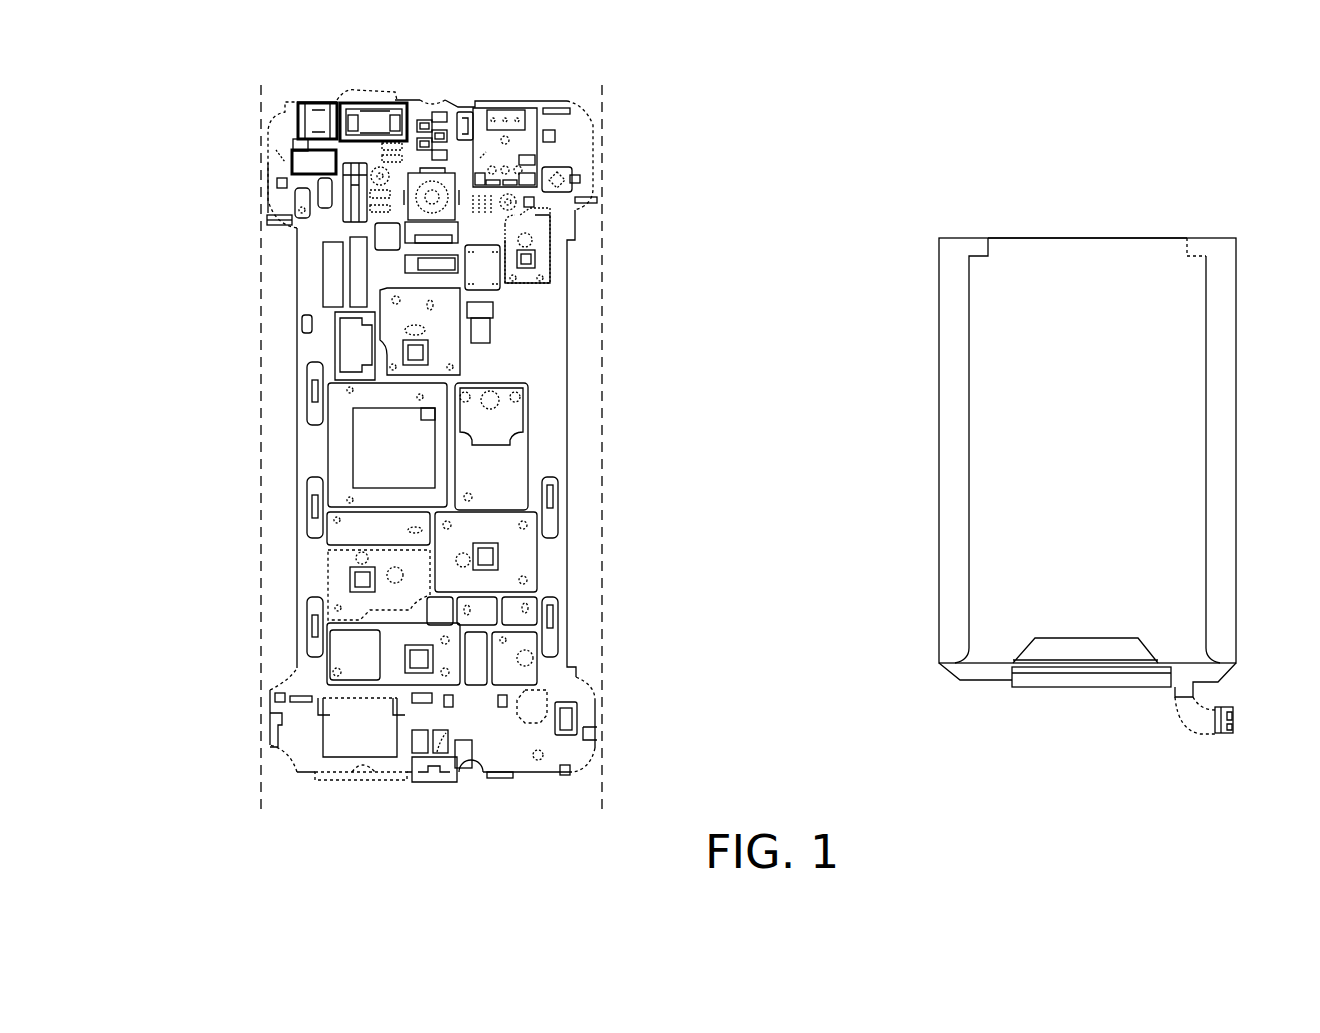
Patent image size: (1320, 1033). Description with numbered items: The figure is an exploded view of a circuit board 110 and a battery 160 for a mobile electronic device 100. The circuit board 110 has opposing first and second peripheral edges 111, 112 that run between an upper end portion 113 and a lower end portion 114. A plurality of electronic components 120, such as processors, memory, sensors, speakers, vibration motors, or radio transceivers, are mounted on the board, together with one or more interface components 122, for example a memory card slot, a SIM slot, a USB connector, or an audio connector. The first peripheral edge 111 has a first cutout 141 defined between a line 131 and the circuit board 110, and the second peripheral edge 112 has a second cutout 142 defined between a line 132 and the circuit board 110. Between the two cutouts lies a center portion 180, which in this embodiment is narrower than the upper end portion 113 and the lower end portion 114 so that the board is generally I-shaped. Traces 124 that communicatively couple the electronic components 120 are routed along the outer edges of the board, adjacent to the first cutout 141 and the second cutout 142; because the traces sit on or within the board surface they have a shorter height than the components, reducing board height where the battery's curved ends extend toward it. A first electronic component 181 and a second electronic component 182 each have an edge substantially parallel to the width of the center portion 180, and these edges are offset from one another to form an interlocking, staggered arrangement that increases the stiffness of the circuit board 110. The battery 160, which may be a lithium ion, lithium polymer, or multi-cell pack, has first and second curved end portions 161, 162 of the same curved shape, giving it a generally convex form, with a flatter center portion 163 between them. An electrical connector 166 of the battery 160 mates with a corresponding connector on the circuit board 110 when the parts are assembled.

The mobile electronic device 100 is at (1119, 474).
The circuit board 110 is at (570, 100).
The first peripheral edge 111 is at (215, 294).
The second peripheral edge 112 is at (650, 298).
The upper end portion 113 is at (434, 98).
The lower end portion 114 is at (448, 790).
The electronic components 120 is at (542, 408).
The interface component 122 is at (508, 98).
The traces 124 is at (296, 388).
The line 131 is at (262, 779).
The line 132 is at (602, 779).
The first cutout 141 is at (286, 655).
The second cutout 142 is at (577, 655).
The battery 160 is at (1047, 688).
The first curved end portion 161 is at (963, 212).
The second curved end portion 162 is at (1212, 212).
The center portion 163 is at (1085, 212).
The electrical connector 166 is at (1237, 737).
The center portion 180 is at (213, 398).
The first electronic component 181 is at (350, 575).
The second electronic component 182 is at (516, 560).